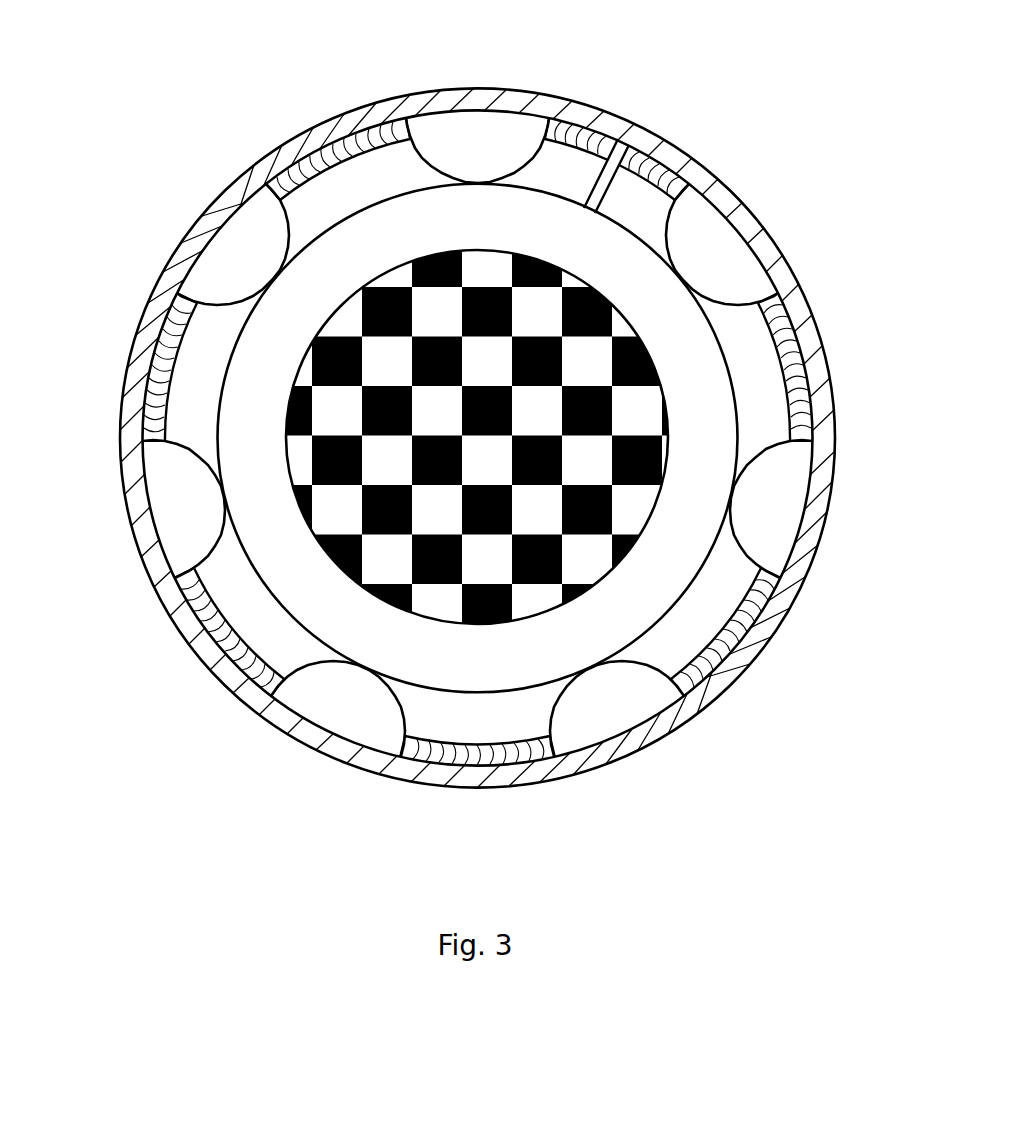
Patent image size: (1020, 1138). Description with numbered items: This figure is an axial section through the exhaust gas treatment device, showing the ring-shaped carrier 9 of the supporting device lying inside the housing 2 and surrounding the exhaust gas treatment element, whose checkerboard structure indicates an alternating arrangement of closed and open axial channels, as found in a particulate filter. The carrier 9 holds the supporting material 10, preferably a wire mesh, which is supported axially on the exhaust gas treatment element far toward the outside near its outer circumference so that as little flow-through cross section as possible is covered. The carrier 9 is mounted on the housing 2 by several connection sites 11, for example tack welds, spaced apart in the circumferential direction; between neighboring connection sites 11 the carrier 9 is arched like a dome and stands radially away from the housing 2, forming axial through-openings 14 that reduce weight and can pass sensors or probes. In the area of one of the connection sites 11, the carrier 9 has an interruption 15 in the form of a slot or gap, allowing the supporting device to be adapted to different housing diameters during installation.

The housing 2 is at (303, 128).
The carrier 9 is at (317, 197).
The supporting material 10 is at (260, 382).
The connection site 11 is at (365, 127).
The axial through-opening 14 is at (478, 133).
The interruption 15 is at (607, 178).